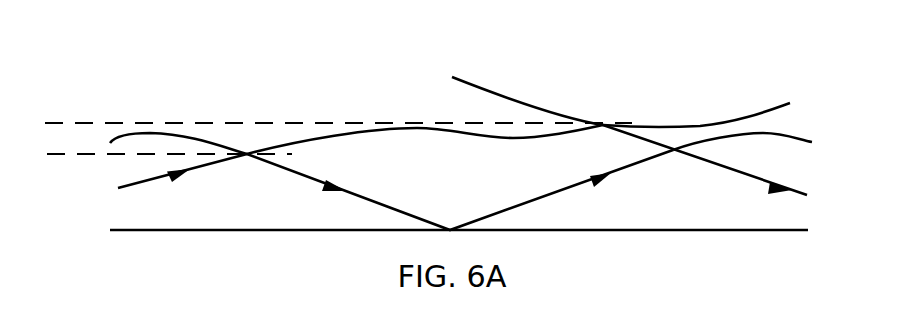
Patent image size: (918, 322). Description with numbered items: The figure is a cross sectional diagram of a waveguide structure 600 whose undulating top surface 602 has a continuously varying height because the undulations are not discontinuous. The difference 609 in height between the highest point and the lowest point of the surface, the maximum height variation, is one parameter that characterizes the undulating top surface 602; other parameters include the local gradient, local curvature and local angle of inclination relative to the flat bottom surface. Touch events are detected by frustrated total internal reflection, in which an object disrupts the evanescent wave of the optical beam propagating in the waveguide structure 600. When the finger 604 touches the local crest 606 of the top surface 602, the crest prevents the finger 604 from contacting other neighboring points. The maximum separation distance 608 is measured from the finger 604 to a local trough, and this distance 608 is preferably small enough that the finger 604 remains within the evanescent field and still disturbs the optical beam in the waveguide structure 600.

The waveguide structure 600 is at (715, 211).
The undulating top surface 602 is at (385, 132).
The finger 604 is at (508, 100).
The local crest 606 is at (607, 124).
The maximum separation distance 608 is at (682, 170).
The difference in height 609 is at (73, 174).